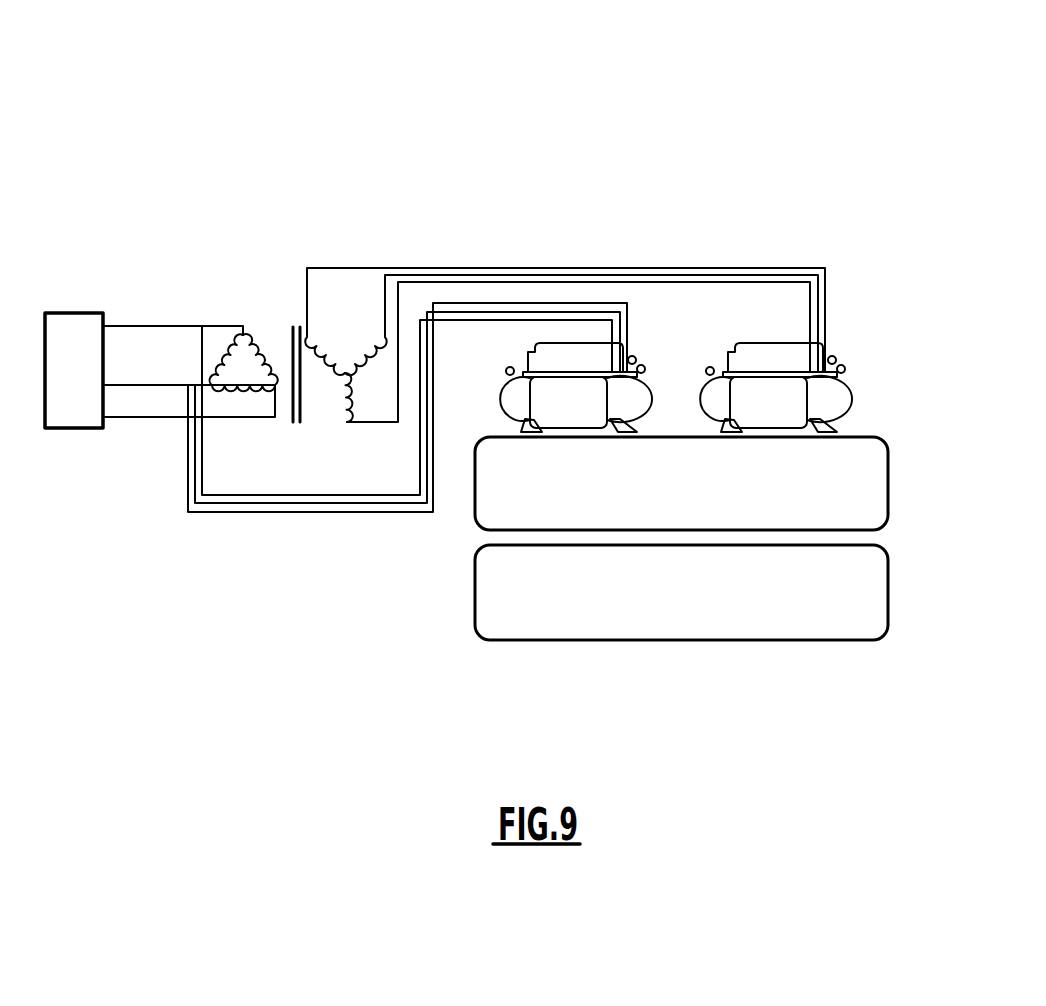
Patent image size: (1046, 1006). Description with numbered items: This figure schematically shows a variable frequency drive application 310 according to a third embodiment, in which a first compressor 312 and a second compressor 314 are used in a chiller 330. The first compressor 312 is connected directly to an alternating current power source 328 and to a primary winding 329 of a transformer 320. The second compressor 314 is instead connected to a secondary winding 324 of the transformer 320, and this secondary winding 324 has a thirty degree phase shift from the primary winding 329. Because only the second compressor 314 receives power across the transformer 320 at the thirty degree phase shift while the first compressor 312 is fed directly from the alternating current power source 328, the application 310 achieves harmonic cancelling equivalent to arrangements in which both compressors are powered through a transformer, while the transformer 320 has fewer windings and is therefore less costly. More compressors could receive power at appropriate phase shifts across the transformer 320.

The variable frequency drive application 310 is at (306, 86).
The first compressor 312 is at (540, 343).
The second compressor 314 is at (740, 341).
The transformer 320 is at (275, 314).
The secondary winding 324 is at (376, 338).
The alternating current power source 328 is at (98, 383).
The primary winding 329 is at (228, 387).
The chiller 330 is at (904, 433).